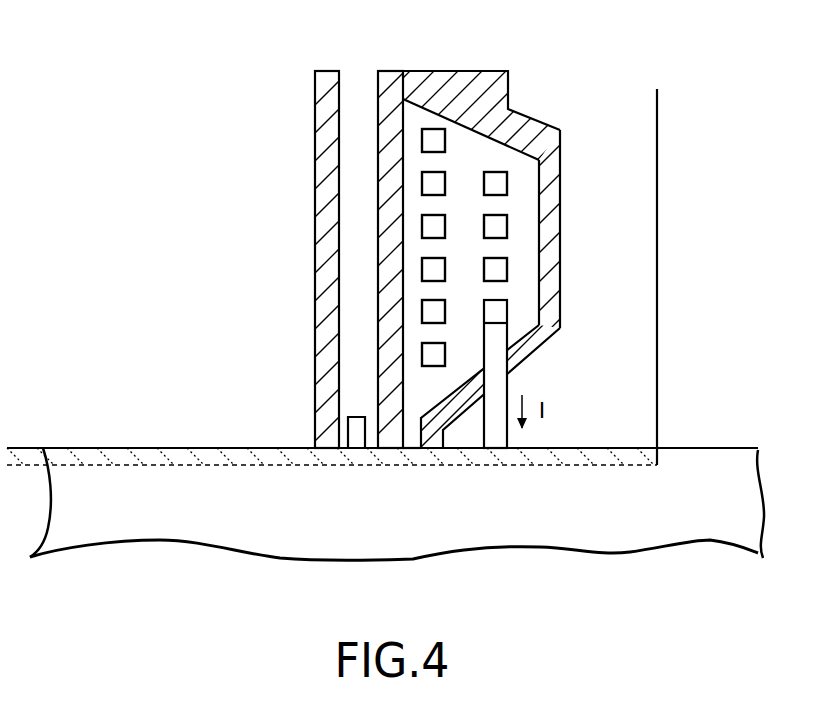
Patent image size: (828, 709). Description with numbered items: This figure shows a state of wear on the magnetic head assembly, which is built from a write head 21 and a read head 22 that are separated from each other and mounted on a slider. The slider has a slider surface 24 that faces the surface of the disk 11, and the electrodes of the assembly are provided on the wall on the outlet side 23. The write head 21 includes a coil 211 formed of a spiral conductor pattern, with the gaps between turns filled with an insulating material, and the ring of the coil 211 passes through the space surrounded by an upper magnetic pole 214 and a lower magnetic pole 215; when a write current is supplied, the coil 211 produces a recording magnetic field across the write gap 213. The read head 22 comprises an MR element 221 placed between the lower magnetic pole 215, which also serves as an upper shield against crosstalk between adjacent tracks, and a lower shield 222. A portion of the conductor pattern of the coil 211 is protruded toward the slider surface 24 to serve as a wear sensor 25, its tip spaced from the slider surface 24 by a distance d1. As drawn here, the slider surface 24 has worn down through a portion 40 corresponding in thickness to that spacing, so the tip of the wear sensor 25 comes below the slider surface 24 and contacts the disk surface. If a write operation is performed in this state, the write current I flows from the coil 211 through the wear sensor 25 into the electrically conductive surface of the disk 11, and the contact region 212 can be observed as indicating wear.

The disk 11 is at (167, 527).
The slider surface 24 is at (135, 449).
The worn portion 40 is at (190, 448).
The outlet side 23 is at (660, 137).
The lower shield 222 is at (318, 180).
The MR element 221 is at (358, 449).
The read head 22 is at (338, 454).
The write gap 213 is at (410, 442).
The write head 21 is at (417, 273).
The lower magnetic pole 215 is at (386, 113).
The electrode top portion 212 is at (493, 148).
The coil 211 is at (503, 187).
The upper magnetic pole 214 is at (558, 343).
The wear sensor 25 is at (492, 436).